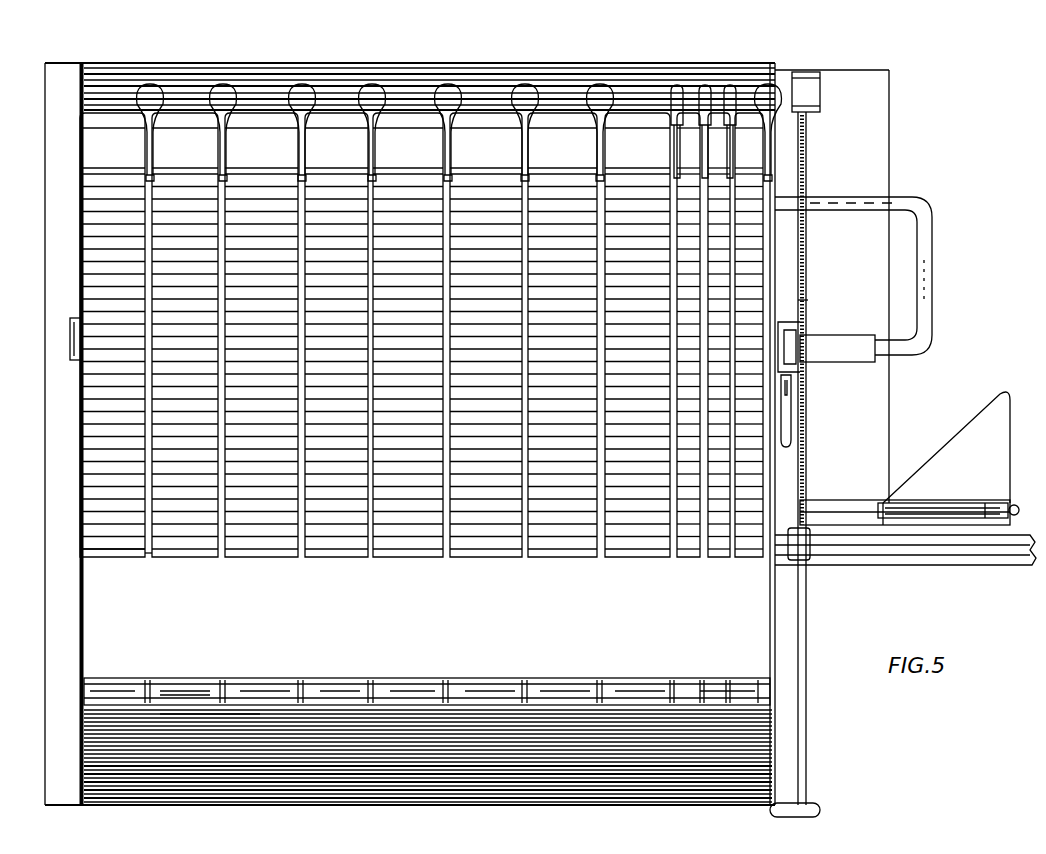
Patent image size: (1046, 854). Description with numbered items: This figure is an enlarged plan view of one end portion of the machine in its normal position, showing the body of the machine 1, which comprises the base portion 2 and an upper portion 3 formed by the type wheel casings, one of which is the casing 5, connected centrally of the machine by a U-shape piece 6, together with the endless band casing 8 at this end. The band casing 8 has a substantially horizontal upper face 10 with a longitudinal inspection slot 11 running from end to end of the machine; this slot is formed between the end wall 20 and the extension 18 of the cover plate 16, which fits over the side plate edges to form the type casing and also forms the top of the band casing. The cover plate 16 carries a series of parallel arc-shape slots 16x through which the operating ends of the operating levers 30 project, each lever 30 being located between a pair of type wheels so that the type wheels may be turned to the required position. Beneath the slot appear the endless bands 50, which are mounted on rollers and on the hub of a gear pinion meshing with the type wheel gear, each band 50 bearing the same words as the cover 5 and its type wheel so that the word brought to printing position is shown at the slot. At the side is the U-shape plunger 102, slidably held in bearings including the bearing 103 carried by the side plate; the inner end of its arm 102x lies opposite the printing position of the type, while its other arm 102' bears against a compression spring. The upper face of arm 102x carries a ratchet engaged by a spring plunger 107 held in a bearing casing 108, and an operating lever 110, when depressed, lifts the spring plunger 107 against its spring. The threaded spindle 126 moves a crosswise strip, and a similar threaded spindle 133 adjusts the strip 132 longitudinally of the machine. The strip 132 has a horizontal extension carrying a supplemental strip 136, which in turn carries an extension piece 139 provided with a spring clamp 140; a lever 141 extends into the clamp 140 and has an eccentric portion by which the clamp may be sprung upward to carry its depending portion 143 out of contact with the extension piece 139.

The body of the machine 1 is at (53, 368).
The base portion 2 is at (62, 130).
The upper portion 3 is at (490, 68).
The type wheel casing 5 is at (404, 560).
The U-shape piece 6 is at (496, 132).
The endless band casing 8 is at (230, 733).
The upper face 10 is at (427, 617).
The longitudinal inspection slot 11 is at (131, 686).
The cover plate 16 is at (78, 547).
The parallel arc-shape slots 16x is at (146, 556).
The extension 18 is at (568, 680).
The end wall 20 is at (745, 745).
The operating lever 30 is at (152, 148).
The endless bands 50 is at (253, 695).
The U-shape plunger 102 is at (879, 276).
The arm of the plunger 102' is at (855, 228).
The arm of the plunger 102x is at (888, 335).
The bearing 103 is at (850, 352).
The spring plunger 107 is at (808, 372).
The bearing casing 108 is at (797, 312).
The operating lever 110 is at (790, 418).
The threaded spindle 126 is at (808, 187).
The strip 132 is at (900, 545).
The threaded spindle 133 is at (808, 489).
The supplemental strip 136 is at (870, 505).
The extension piece 139 is at (963, 445).
The spring clamp 140 is at (980, 515).
The lever 141 is at (1012, 506).
The depending portion 143 is at (918, 508).